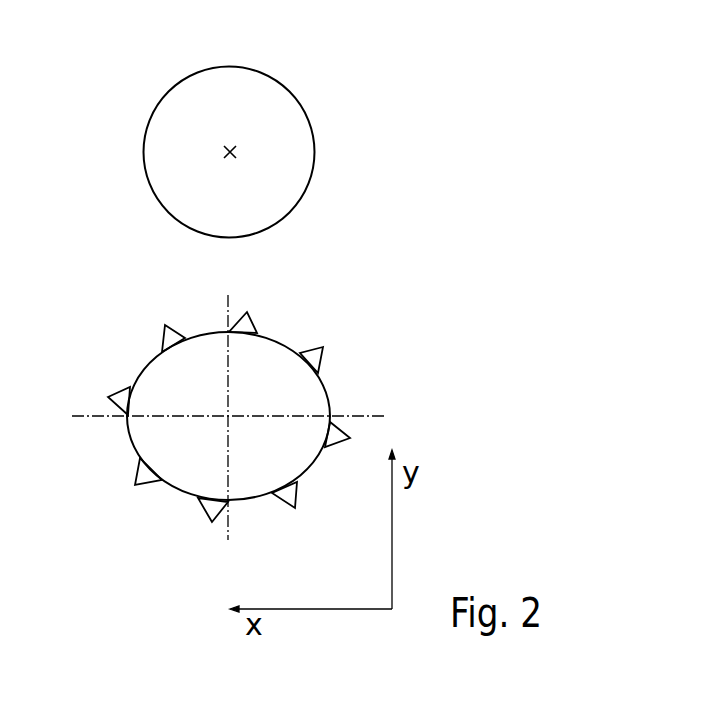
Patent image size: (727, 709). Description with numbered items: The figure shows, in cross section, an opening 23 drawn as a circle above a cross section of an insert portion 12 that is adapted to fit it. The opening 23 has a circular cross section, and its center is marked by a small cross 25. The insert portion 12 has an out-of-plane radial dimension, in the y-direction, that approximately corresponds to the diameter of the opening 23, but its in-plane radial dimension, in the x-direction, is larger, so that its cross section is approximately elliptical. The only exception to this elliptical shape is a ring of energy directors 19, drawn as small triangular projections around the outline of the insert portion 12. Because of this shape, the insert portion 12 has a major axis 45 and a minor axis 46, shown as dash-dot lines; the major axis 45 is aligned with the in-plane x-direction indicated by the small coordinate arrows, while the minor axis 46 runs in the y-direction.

The insert portion 12 is at (188, 447).
The energy directors 19 is at (312, 359).
The opening 23 is at (242, 110).
The center point 25 is at (240, 149).
The major axis 45 is at (152, 415).
The minor axis 46 is at (230, 363).